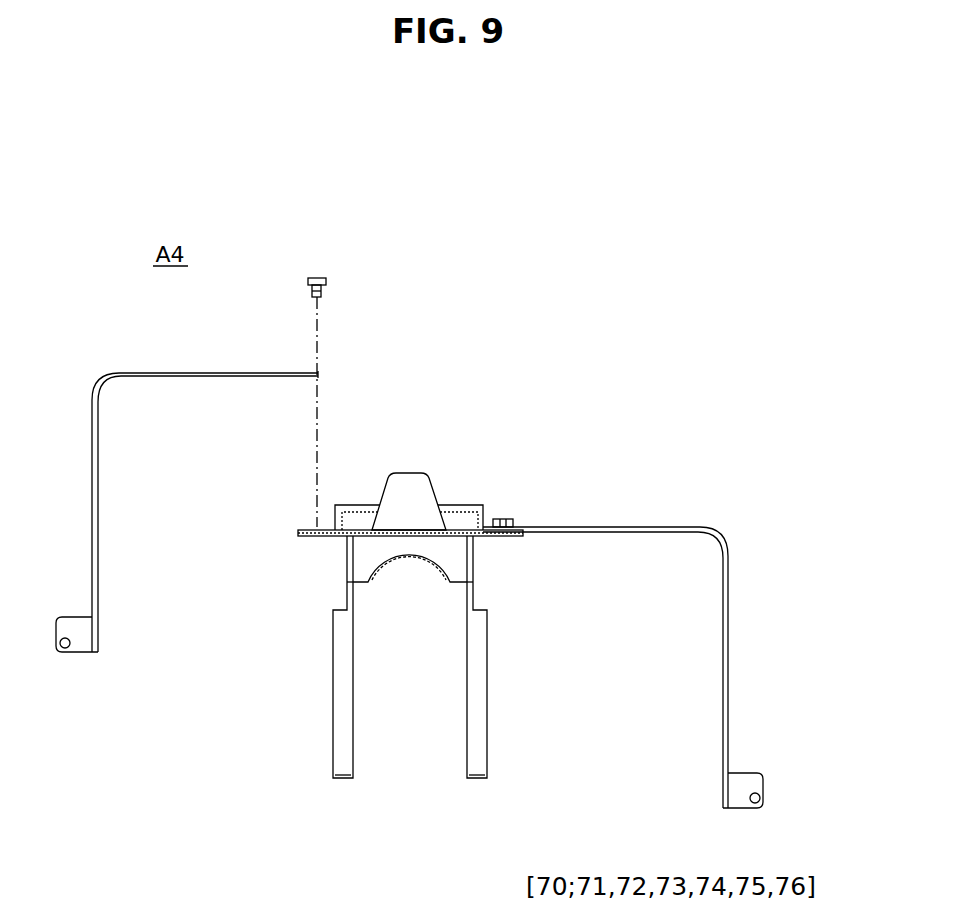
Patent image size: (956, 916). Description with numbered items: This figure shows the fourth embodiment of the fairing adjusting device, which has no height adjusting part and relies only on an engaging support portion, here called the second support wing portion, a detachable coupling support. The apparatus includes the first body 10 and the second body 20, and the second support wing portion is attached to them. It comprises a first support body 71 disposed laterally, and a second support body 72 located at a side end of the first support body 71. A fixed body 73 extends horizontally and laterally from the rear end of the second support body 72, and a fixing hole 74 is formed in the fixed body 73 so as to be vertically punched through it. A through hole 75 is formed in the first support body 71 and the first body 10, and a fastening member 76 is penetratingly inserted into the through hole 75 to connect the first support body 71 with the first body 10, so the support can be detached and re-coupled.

The first body 10 is at (449, 486).
The second body 20 is at (510, 659).
The first support body 71 is at (623, 528).
The second support body 72 is at (725, 598).
The fixed body 73 is at (740, 778).
The fixing hole 74 is at (762, 798).
The through hole 75 is at (317, 527).
The coupling member 76 is at (330, 282).